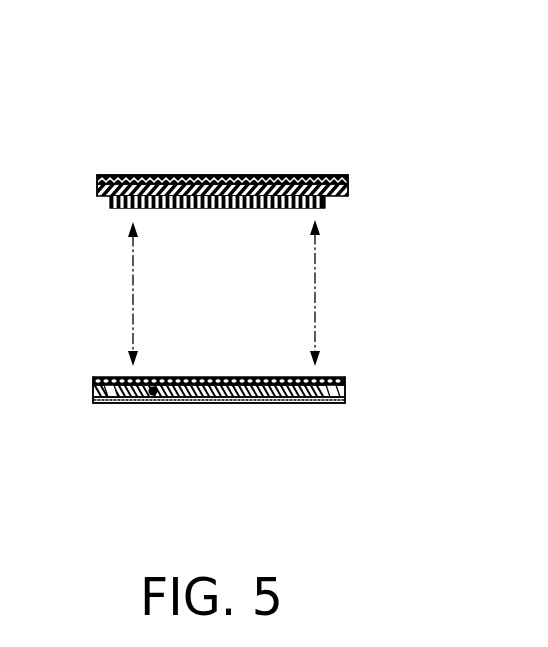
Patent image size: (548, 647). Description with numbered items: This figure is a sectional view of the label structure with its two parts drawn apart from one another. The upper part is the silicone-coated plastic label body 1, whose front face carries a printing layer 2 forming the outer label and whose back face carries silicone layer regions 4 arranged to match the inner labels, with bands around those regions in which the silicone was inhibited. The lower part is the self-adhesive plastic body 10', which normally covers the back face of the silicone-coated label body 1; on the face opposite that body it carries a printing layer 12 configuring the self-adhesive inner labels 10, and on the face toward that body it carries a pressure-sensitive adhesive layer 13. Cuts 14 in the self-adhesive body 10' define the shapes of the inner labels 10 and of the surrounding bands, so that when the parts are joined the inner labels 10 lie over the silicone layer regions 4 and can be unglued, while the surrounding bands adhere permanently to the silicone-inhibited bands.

The silicone-coated plastic label body 1 is at (172, 181).
The printing layer 2 is at (209, 172).
The silicone layer regions 4 is at (283, 207).
The self-adhesive inner labels 10 is at (219, 440).
The self-adhesive plastic body 10' is at (219, 449).
The printing layer 12 is at (198, 404).
The pressure-sensitive adhesive layer 13 is at (244, 378).
The cuts 14 is at (112, 403).